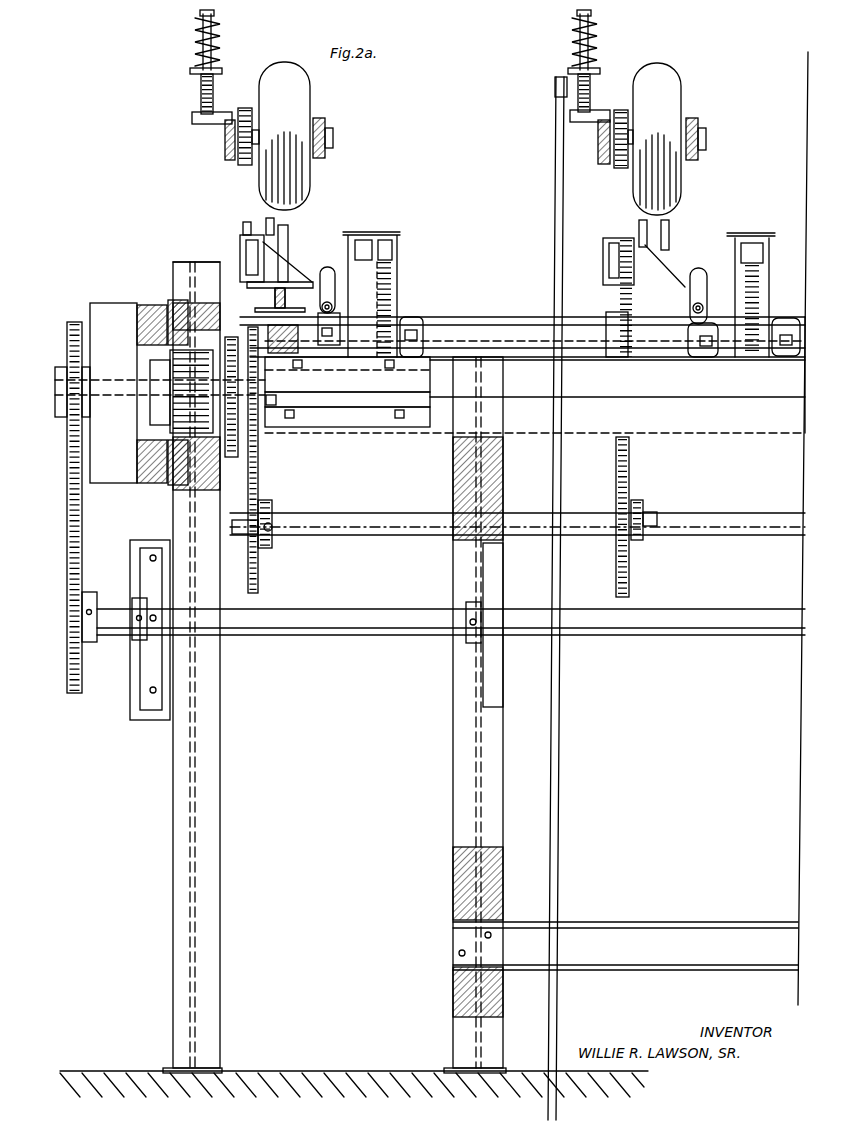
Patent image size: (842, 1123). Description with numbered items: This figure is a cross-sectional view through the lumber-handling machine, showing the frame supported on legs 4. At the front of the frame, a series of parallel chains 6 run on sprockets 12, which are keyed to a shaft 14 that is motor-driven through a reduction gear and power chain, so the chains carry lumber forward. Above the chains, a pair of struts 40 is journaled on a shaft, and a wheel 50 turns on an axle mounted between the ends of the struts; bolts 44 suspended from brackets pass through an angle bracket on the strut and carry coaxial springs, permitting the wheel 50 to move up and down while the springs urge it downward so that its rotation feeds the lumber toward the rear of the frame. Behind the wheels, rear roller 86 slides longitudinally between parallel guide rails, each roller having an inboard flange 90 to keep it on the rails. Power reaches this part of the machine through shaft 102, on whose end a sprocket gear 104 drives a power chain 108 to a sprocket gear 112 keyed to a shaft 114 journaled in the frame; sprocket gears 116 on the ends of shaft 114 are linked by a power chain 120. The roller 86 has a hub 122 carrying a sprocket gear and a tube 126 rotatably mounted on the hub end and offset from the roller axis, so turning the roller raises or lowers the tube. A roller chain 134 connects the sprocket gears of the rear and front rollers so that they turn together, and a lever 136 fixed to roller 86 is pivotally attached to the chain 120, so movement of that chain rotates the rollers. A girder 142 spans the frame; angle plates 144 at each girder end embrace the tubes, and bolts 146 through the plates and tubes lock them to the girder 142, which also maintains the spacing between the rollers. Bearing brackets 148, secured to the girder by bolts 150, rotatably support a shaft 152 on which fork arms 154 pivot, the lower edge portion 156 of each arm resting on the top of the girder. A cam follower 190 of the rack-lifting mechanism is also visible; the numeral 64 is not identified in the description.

The legs 4 is at (195, 838).
The parallel chains 6 is at (258, 472).
The sprockets 12 is at (265, 545).
The shaft 14 is at (395, 537).
The struts 40 is at (603, 120).
The bolts 44 is at (200, 96).
The wheel 50 is at (272, 183).
The bearing 64 is at (178, 300).
The rear roller 86 is at (277, 394).
The inboard flange 90 is at (218, 280).
The shaft 102 is at (692, 632).
The sprocket gear 104 is at (96, 636).
The power chain 108 is at (68, 522).
The sprocket gears 112 is at (62, 375).
The shaft 114 is at (100, 410).
The sprocket gears 116 is at (165, 382).
The power chain 120 is at (140, 318).
The hub 122 is at (347, 374).
The tube 126 is at (330, 396).
The roller chain 134 is at (240, 445).
The lever 136 is at (160, 368).
The girder 142 is at (768, 427).
The angle plates 144 is at (368, 410).
The bolts 146 is at (295, 410).
The bearing brackets 148 is at (345, 300).
The bolts 150 is at (782, 356).
The shaft 152 is at (412, 318).
The fork arms 154 is at (370, 235).
The lower edge portion 156 is at (336, 280).
The cam follower 190 is at (690, 290).